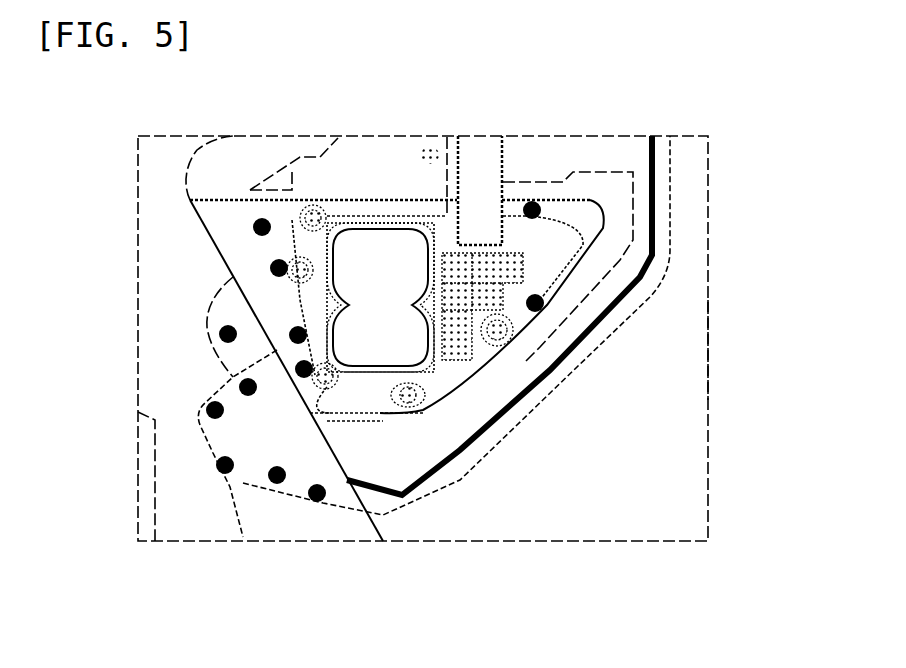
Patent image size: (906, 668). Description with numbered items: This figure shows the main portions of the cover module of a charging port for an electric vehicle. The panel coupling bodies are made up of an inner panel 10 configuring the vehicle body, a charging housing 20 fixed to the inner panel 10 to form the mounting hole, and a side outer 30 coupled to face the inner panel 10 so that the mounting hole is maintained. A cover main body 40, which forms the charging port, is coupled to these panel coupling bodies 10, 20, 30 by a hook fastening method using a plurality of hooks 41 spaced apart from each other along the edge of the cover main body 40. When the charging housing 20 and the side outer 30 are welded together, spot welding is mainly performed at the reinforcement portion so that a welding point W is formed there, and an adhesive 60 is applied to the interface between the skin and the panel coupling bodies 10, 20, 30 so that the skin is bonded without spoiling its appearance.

The inner panel 10 is at (190, 520).
The charging housing 20 is at (298, 480).
The side outer 30 is at (687, 398).
The cover main body 40 is at (388, 413).
The hooks 41 is at (314, 205).
The adhesive 60 is at (655, 233).
The welding point W is at (268, 262).